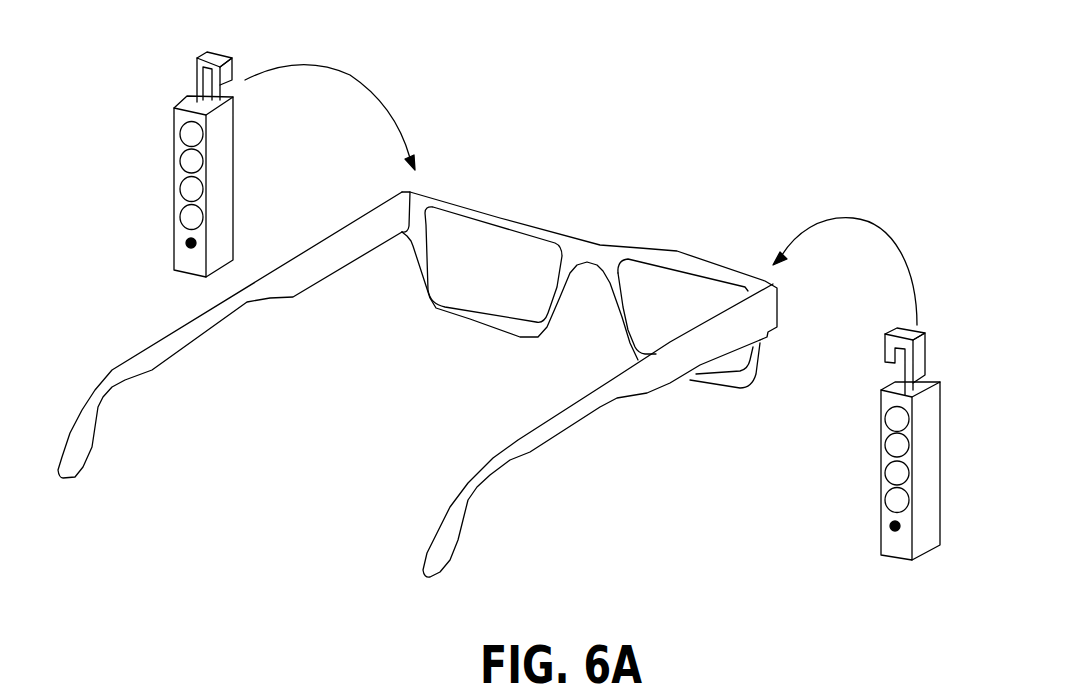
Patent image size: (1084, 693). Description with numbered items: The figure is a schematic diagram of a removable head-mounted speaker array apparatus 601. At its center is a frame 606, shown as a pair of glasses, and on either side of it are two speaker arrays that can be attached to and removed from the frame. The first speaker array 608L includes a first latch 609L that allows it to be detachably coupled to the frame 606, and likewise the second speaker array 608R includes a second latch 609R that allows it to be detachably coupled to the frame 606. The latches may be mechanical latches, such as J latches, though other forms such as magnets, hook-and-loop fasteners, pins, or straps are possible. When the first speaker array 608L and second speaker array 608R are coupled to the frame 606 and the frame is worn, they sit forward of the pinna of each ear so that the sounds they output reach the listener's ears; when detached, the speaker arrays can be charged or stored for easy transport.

The removable head-mounted speaker array apparatus 601 is at (417, 315).
The frame 606 is at (672, 253).
The first speaker array 608L is at (177, 257).
The second speaker array 608R is at (928, 543).
The first latch 609L is at (203, 53).
The second latch 609R is at (883, 328).